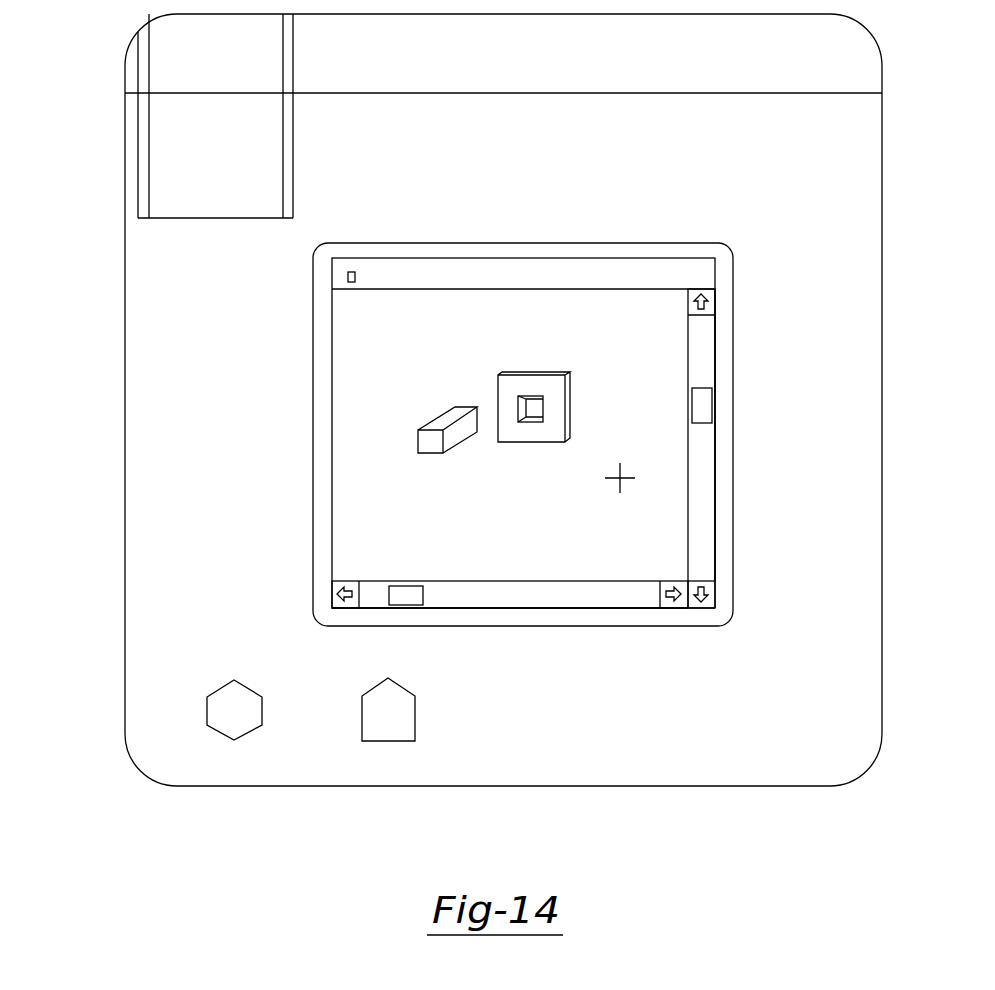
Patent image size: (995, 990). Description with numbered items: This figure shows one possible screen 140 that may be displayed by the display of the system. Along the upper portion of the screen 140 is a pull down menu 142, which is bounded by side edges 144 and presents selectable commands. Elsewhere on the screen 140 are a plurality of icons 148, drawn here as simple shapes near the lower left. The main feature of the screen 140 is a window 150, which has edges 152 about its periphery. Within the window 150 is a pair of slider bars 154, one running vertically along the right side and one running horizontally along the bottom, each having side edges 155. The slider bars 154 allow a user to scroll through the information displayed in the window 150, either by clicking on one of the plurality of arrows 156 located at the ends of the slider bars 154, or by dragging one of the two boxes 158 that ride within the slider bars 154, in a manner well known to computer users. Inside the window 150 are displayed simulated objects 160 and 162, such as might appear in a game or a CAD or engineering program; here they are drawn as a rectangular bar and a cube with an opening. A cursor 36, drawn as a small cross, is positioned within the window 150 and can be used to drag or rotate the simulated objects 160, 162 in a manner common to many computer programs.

The cursor 36 is at (607, 465).
The screen 140 is at (739, 730).
The pull down menu 142 is at (203, 224).
The side edges 144 is at (138, 150).
The icons 148 is at (222, 690).
The window 150 is at (311, 447).
The edges 152 is at (590, 243).
The slider bars 154 is at (719, 367).
The side edges 155 is at (716, 493).
The arrows 156 is at (716, 308).
The boxes 158 is at (690, 410).
The simulated object 160 is at (434, 418).
The simulated object 162 is at (535, 372).